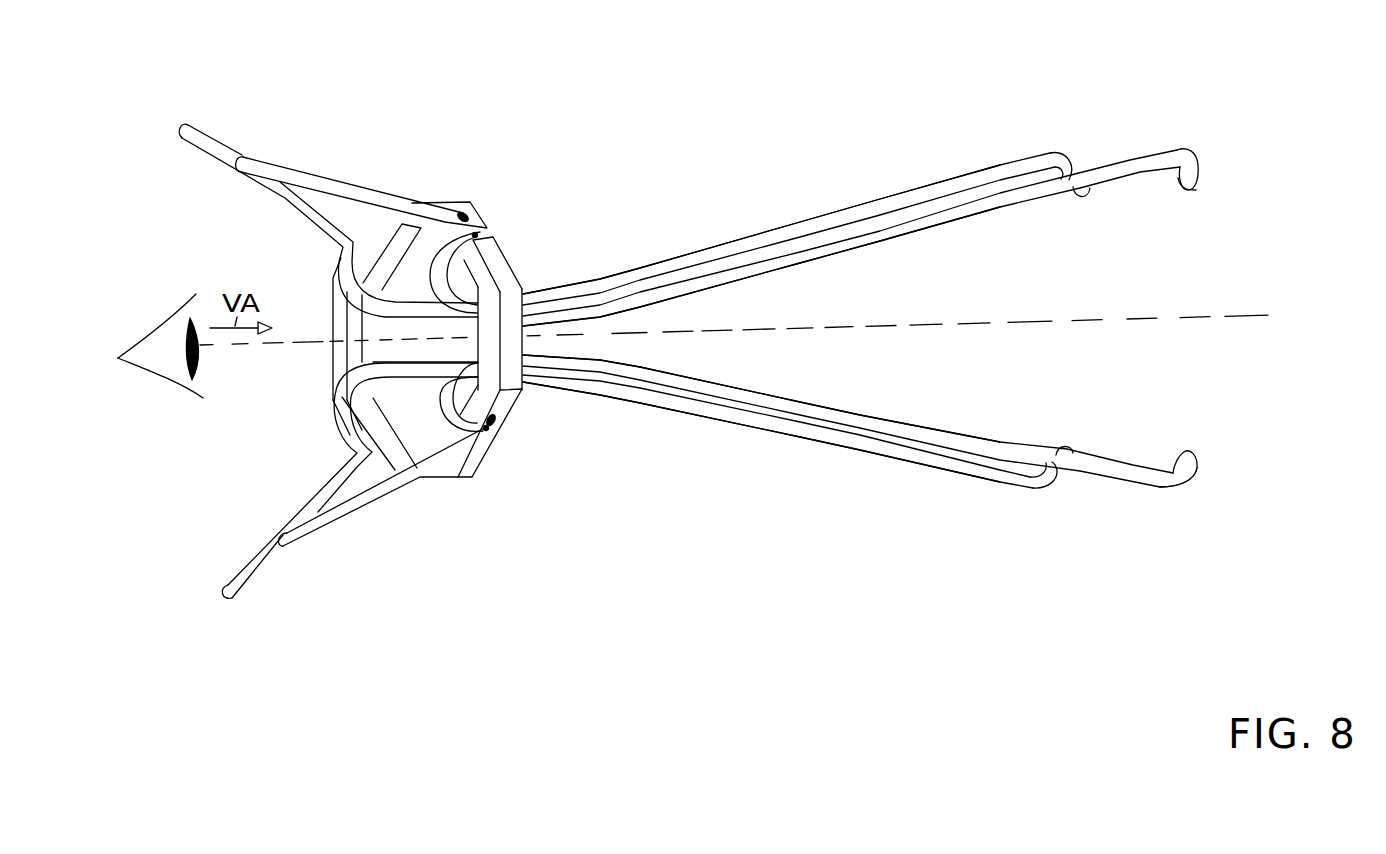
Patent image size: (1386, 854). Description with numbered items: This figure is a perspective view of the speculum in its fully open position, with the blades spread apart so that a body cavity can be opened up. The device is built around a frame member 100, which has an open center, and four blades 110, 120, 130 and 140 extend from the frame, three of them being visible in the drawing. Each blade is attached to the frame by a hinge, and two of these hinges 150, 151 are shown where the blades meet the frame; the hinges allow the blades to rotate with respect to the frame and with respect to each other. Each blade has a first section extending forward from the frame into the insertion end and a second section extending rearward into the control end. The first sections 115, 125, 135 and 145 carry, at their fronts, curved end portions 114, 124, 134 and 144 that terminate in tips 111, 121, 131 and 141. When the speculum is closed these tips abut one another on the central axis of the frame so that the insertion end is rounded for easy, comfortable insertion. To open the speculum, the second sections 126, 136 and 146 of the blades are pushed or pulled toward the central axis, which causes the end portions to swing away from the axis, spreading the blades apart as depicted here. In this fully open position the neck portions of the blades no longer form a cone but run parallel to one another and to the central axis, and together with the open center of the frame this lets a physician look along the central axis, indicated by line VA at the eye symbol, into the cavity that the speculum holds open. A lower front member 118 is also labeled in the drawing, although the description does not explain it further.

The frame member 100 is at (523, 393).
The blade 110 is at (1100, 490).
The tip 111 is at (1192, 451).
The end portion 114 is at (1177, 482).
The first section 115 is at (773, 398).
The lower front tube 118 is at (352, 508).
The blade 120 is at (1147, 141).
The tip 121 is at (1194, 192).
The end portion 124 is at (1199, 151).
The first section 125 is at (807, 253).
The second section 126 is at (311, 176).
The blade 130 is at (958, 163).
The tip 131 is at (1088, 198).
The end portion 134 is at (1062, 158).
The first section 135 is at (798, 224).
The second section 136 is at (203, 125).
The blade 140 is at (900, 471).
The tip 141 is at (1067, 446).
The end portion 144 is at (1036, 489).
The first section 145 is at (733, 418).
The second section 146 is at (235, 598).
The hinge 150 is at (508, 452).
The hinge 151 is at (489, 207).